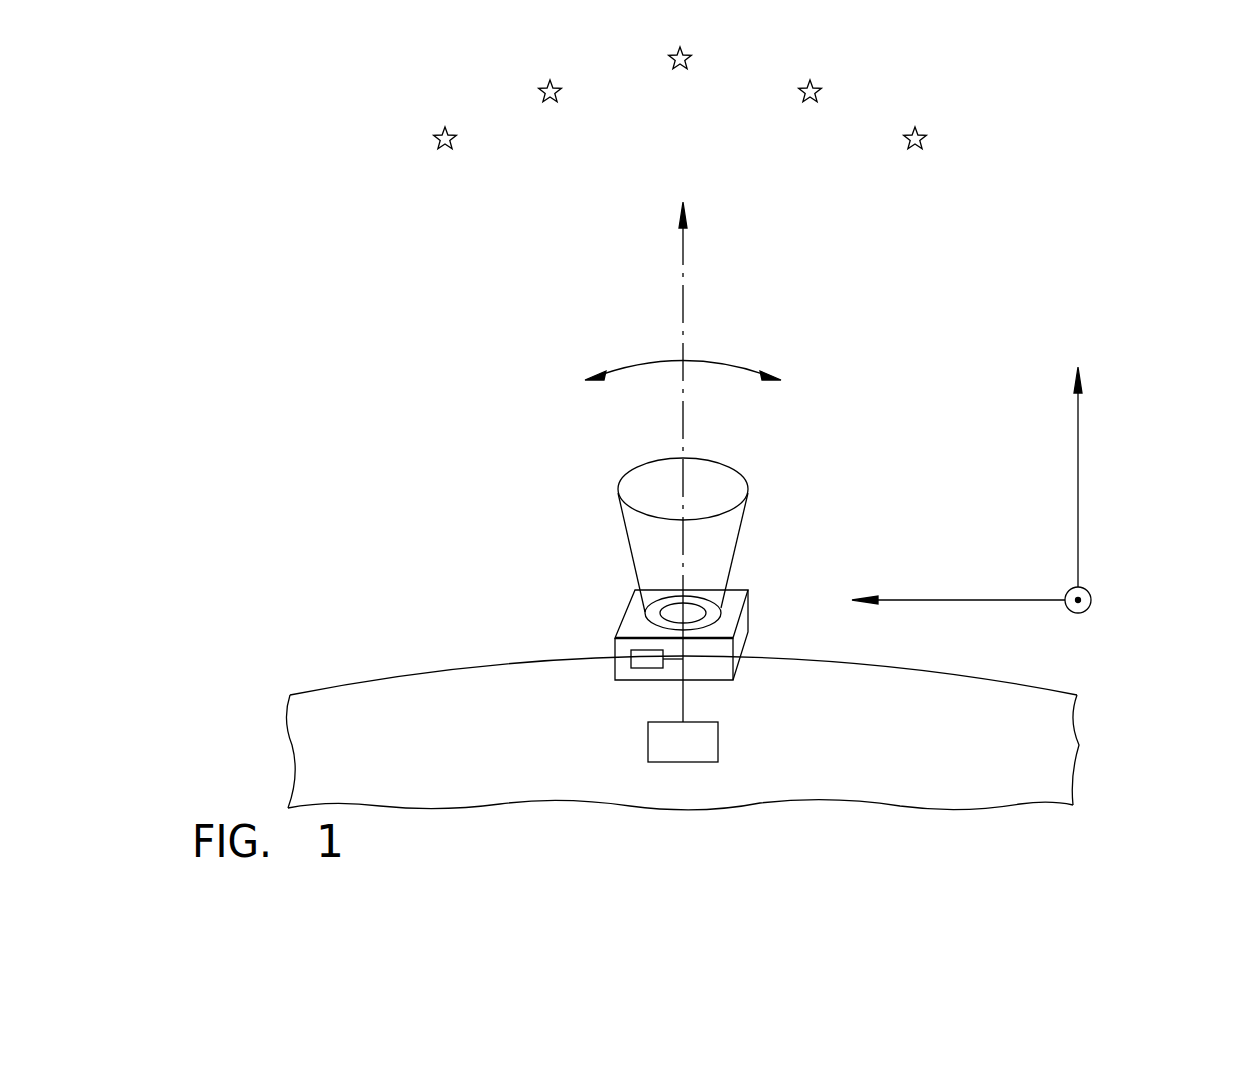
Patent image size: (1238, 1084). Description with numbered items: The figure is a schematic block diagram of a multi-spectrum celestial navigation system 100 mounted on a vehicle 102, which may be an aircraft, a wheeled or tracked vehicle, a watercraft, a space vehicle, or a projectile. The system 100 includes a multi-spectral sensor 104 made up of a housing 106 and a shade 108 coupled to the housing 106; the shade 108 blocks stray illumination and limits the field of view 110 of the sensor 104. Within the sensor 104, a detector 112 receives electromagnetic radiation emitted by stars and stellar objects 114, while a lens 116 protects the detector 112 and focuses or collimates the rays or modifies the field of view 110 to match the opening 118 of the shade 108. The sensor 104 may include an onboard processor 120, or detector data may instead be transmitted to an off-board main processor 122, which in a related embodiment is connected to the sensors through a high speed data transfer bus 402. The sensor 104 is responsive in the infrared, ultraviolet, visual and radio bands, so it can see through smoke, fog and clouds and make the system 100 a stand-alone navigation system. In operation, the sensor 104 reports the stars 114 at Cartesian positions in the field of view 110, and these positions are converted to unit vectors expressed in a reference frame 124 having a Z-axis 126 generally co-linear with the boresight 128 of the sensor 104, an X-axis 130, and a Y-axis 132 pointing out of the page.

The multi-spectrum celestial navigation system 100 is at (352, 357).
The vehicle 102 is at (682, 733).
The multi-spectral sensor 104 is at (565, 597).
The housing 106 is at (748, 641).
The shade 108 is at (724, 532).
The field of view 110 is at (646, 362).
The detector 112 is at (725, 586).
The stars and stellar objects 114 is at (457, 141).
The lens 116 is at (660, 597).
The opening 118 is at (715, 475).
The onboard processor 120 is at (642, 668).
The main processor 122 is at (683, 742).
The reference frame 124 is at (945, 436).
The Z-axis 126 is at (1087, 313).
The boresight 128 is at (683, 302).
The X-axis 130 is at (868, 567).
The Y-axis 132 is at (1095, 617).
The high speed data transfer bus 402 is at (745, 519).